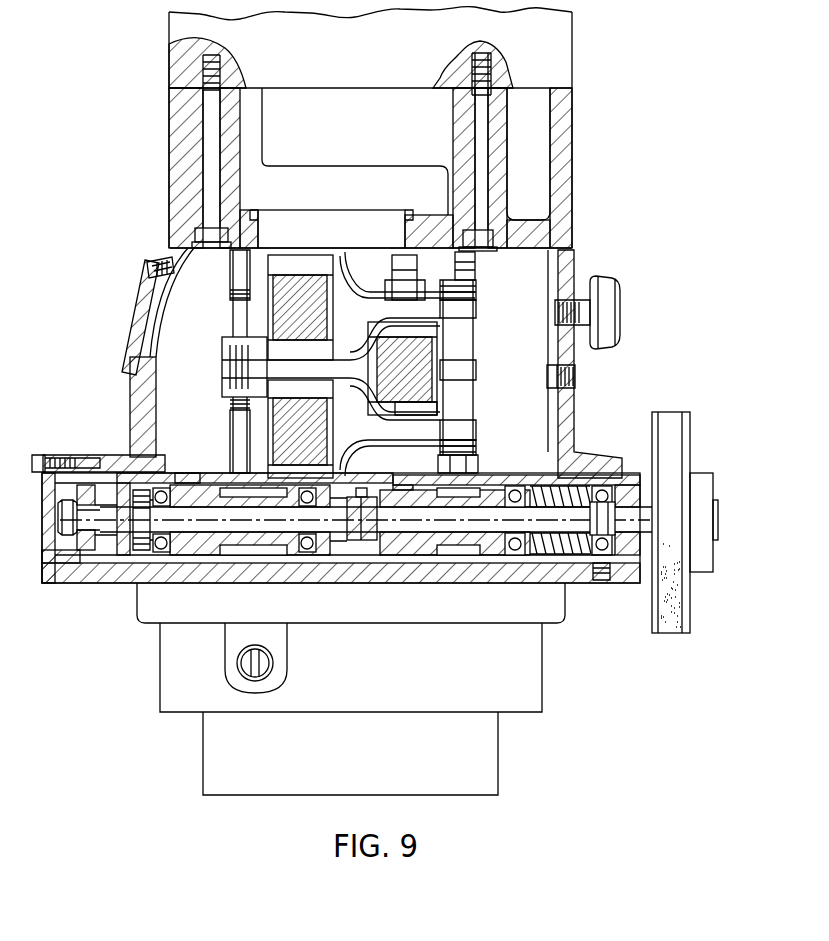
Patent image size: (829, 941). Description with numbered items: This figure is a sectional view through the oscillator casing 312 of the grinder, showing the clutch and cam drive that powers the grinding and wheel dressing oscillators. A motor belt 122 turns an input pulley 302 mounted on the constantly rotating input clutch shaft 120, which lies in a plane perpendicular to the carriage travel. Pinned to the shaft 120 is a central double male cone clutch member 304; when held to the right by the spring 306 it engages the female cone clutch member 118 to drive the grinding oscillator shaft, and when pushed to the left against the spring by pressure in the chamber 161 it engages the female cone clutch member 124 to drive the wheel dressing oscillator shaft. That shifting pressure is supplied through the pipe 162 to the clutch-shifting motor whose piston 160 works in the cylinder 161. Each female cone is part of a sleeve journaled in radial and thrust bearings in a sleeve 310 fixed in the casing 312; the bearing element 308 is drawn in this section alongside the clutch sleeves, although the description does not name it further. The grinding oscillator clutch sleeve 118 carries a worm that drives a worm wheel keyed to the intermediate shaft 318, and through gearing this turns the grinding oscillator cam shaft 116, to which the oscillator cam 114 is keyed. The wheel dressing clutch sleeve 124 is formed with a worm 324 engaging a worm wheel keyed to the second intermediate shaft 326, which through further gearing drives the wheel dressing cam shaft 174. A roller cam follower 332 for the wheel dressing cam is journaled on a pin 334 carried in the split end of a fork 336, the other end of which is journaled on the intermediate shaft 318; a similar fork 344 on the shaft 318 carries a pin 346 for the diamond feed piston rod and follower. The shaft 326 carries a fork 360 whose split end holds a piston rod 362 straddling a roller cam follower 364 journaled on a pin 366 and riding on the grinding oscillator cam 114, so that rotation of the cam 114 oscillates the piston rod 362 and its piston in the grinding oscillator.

The cam 114 is at (470, 375).
The shaft 116 is at (414, 242).
The clutch 118 is at (395, 545).
The shaft 120 is at (645, 540).
The motor belt 122 is at (670, 415).
The clutch 124 is at (295, 545).
The piston 160 is at (80, 572).
The cylinder 161 is at (80, 466).
The pipe 162 is at (112, 562).
The shaft 174 is at (331, 258).
The input pulley 302 is at (700, 483).
The central double male cone clutch member 304 is at (333, 545).
The spring 306 is at (570, 485).
The bearing sleeve 308 is at (215, 540).
The sleeve 310 is at (182, 476).
The casing 312 is at (562, 420).
The intermediate shaft 318 is at (468, 262).
The worm 324 is at (226, 492).
The second intermediate shaft 326 is at (245, 282).
The roller cam follower 332 is at (272, 310).
The pin 334 is at (281, 243).
The fork 336 is at (346, 252).
The fork 344 is at (470, 430).
The pin 346 is at (233, 410).
The fork 360 is at (222, 375).
The piston rod 362 is at (425, 350).
The roller cam follower 364 is at (436, 362).
The pin 366 is at (412, 405).